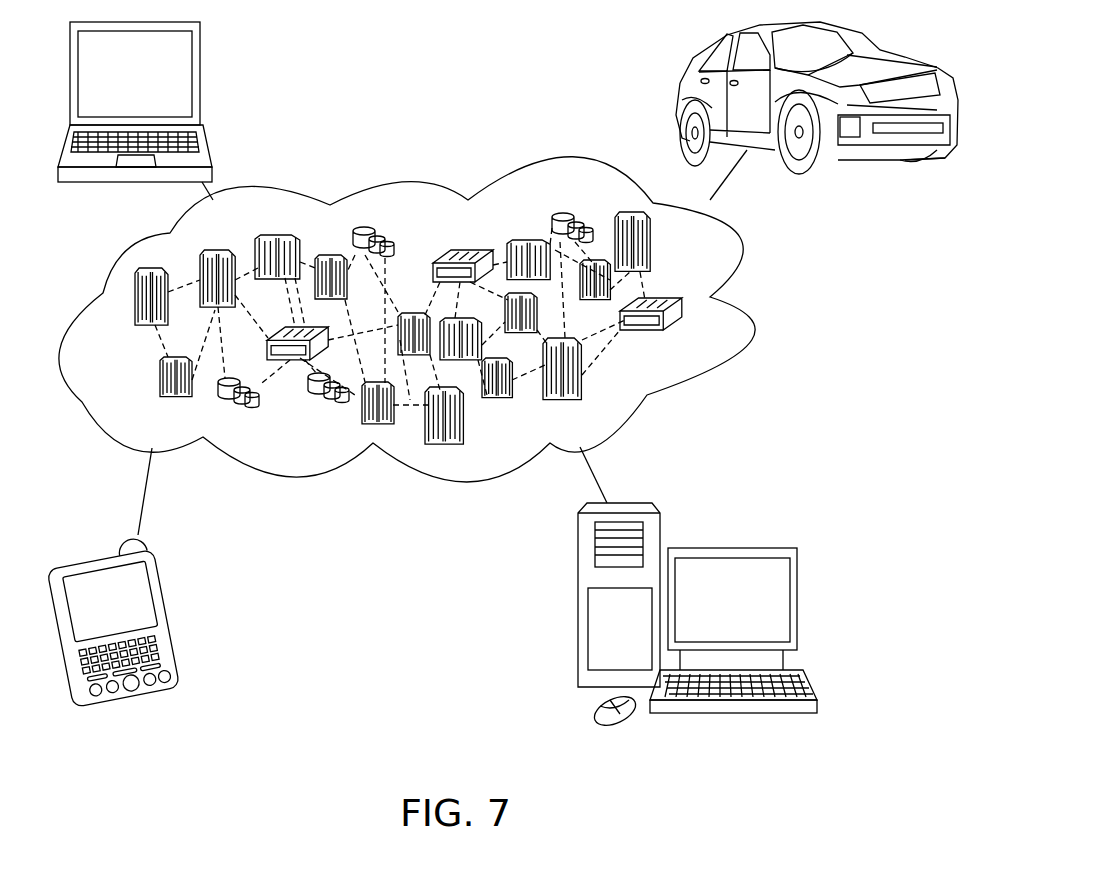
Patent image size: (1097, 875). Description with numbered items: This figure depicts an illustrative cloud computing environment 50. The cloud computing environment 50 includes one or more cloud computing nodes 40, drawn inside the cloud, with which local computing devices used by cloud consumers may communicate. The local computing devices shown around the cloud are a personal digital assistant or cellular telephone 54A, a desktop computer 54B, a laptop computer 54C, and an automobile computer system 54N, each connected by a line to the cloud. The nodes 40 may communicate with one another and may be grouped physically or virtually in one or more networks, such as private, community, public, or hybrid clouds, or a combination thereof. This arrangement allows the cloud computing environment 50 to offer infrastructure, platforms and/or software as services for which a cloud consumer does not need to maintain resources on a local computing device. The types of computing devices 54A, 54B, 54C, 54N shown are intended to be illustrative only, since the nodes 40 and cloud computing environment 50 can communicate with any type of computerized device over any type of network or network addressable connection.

The cloud computing nodes 40 is at (698, 348).
The cloud computing environment 50 is at (750, 248).
The personal digital assistant or cellular telephone 54A is at (170, 600).
The desktop computer 54B is at (798, 598).
The laptop computer 54C is at (203, 80).
The automobile computer system 54N is at (867, 43).